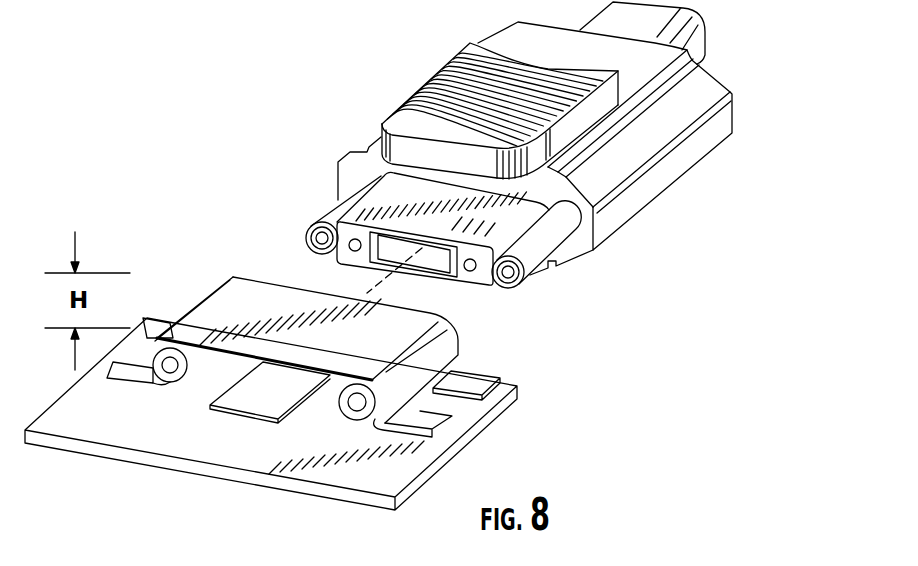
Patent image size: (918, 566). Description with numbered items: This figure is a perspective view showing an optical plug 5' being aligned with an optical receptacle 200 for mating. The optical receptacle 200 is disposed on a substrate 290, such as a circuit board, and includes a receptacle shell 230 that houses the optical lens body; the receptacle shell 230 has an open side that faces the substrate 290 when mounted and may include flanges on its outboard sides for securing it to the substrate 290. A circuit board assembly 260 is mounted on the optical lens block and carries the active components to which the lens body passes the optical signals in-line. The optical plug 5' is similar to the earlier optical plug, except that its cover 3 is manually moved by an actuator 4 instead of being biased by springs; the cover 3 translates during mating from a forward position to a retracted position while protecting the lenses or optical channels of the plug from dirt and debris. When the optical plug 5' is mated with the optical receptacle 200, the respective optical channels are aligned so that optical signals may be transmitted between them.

The optical plug 5' is at (566, 138).
The actuator 4 is at (468, 43).
The cover 3 is at (484, 290).
The optical receptacle 200 is at (560, 375).
The receptacle shell 230 is at (223, 313).
The circuit board assembly 260 is at (292, 388).
The substrate 290 is at (127, 452).